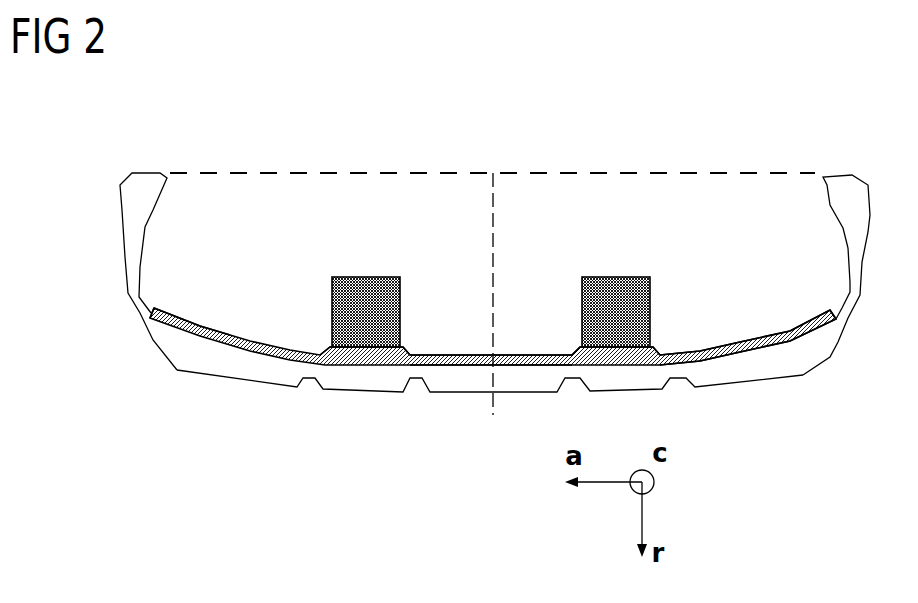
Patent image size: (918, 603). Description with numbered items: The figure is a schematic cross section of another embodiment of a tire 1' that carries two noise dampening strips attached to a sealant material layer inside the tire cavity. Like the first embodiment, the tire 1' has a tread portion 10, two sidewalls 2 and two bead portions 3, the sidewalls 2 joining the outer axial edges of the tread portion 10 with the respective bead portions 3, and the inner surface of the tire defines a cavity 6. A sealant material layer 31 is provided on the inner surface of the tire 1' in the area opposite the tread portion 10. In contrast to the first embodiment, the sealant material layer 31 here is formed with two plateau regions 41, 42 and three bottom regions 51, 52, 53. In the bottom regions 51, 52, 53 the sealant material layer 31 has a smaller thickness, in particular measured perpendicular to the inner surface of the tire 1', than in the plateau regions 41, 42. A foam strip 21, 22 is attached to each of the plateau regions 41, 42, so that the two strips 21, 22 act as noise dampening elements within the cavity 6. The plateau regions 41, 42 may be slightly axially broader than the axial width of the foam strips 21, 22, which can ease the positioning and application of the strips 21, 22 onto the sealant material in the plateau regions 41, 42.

The tire 1' is at (495, 275).
The sidewalls 2 is at (125, 288).
The bead portions 3 is at (108, 170).
The tire cavity 6 is at (750, 195).
The tread portion 10 is at (787, 378).
The foam strip 21 is at (400, 292).
The foam strip 22 is at (652, 297).
The sealant material layer 31 is at (193, 316).
The plateau region 41 is at (330, 343).
The plateau region 42 is at (580, 345).
The bottom region 51 is at (256, 340).
The bottom region 52 is at (508, 353).
The bottom region 53 is at (772, 335).